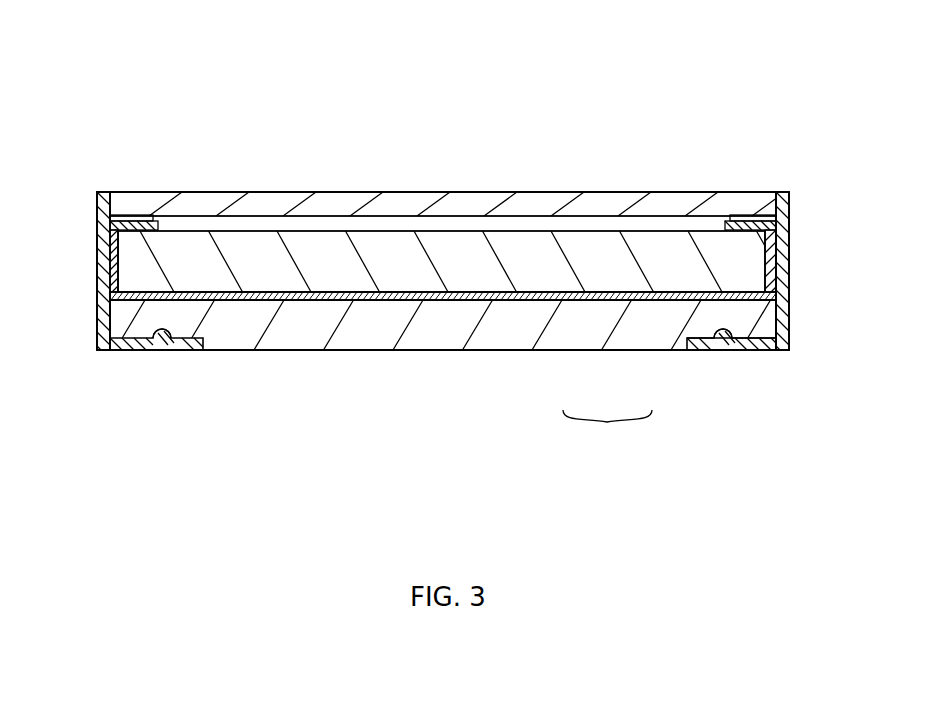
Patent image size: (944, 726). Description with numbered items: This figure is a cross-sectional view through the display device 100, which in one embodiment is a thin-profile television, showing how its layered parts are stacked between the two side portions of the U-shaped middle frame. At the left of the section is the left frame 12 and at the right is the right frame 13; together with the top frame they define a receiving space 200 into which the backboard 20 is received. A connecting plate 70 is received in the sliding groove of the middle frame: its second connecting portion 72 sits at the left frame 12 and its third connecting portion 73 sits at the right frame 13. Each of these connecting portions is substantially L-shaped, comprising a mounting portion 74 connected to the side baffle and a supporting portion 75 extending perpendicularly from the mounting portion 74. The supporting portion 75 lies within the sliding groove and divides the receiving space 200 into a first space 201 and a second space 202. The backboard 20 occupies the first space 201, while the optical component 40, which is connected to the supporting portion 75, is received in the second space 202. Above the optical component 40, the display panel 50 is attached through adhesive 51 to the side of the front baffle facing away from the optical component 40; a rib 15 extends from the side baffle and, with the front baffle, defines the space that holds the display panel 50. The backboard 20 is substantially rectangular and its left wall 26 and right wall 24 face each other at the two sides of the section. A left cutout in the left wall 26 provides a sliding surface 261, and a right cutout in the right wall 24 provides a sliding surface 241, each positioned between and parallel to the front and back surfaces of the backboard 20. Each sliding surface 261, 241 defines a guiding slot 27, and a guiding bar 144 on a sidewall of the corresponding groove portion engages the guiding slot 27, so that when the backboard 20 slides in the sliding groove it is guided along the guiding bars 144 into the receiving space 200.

The display device 100 is at (183, 68).
The rib 15 is at (107, 200).
The left wall 26 is at (104, 325).
The sliding surface 261 is at (140, 350).
The third connecting portion 73 is at (850, 217).
The right frame 13 is at (784, 270).
The right wall 24 is at (780, 309).
The guiding slot 27 is at (735, 333).
The sliding surface 241 is at (766, 350).
The guiding bar 144 is at (727, 338).
The display panel 50 is at (593, 207).
The adhesive 51 is at (140, 218).
The supporting portion 75 is at (739, 292).
The connecting plate 70 is at (104, 241).
The second connecting portion 72 is at (112, 263).
The mounting portion 74 is at (779, 241).
The optical component 40 is at (518, 252).
The left frame 12 is at (112, 294).
The backboard 20 is at (438, 333).
The first space 201 is at (558, 352).
The second space 202 is at (614, 270).
The receiving space 200 is at (607, 430).